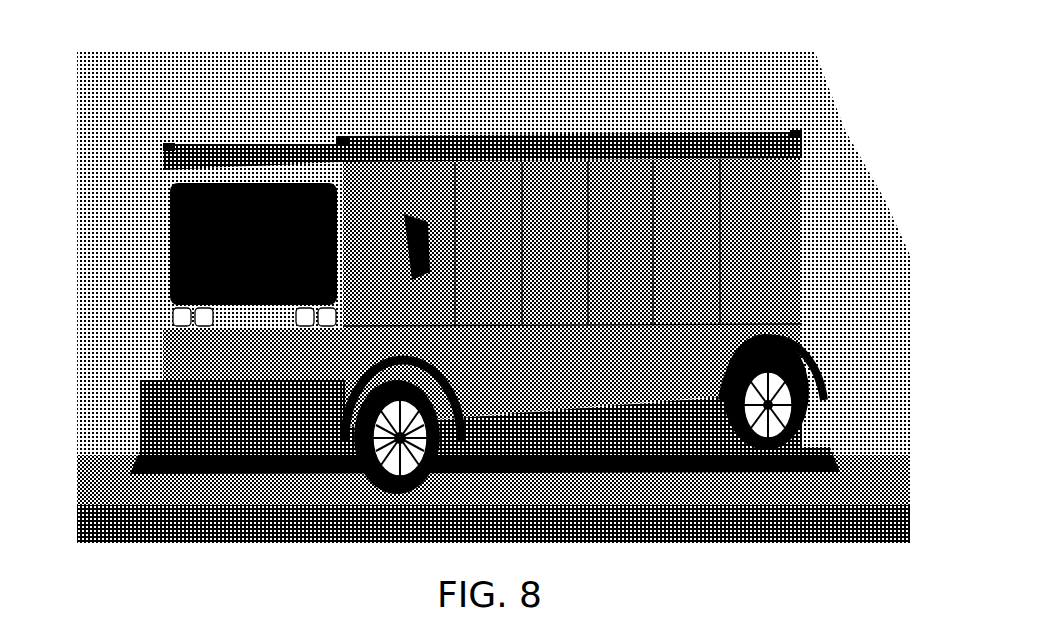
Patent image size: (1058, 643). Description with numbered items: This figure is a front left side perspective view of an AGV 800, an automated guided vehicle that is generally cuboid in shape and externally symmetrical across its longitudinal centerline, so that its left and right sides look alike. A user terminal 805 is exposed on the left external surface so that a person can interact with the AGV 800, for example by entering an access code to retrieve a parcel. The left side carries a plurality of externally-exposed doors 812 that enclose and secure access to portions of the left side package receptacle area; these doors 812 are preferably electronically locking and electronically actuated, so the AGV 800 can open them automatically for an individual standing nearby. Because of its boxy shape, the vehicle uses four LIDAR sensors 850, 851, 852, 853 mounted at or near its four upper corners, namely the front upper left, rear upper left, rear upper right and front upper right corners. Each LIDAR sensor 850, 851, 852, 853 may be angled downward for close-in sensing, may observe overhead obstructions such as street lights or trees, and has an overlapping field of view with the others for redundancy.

The AGV 800 is at (450, 248).
The user terminal 805 is at (412, 222).
The externally-exposed doors 812 is at (680, 230).
The LIDAR sensor 850 is at (346, 139).
The LIDAR sensor 851 is at (795, 130).
The LIDAR sensor 852 is at (600, 130).
The LIDAR sensor 853 is at (167, 145).